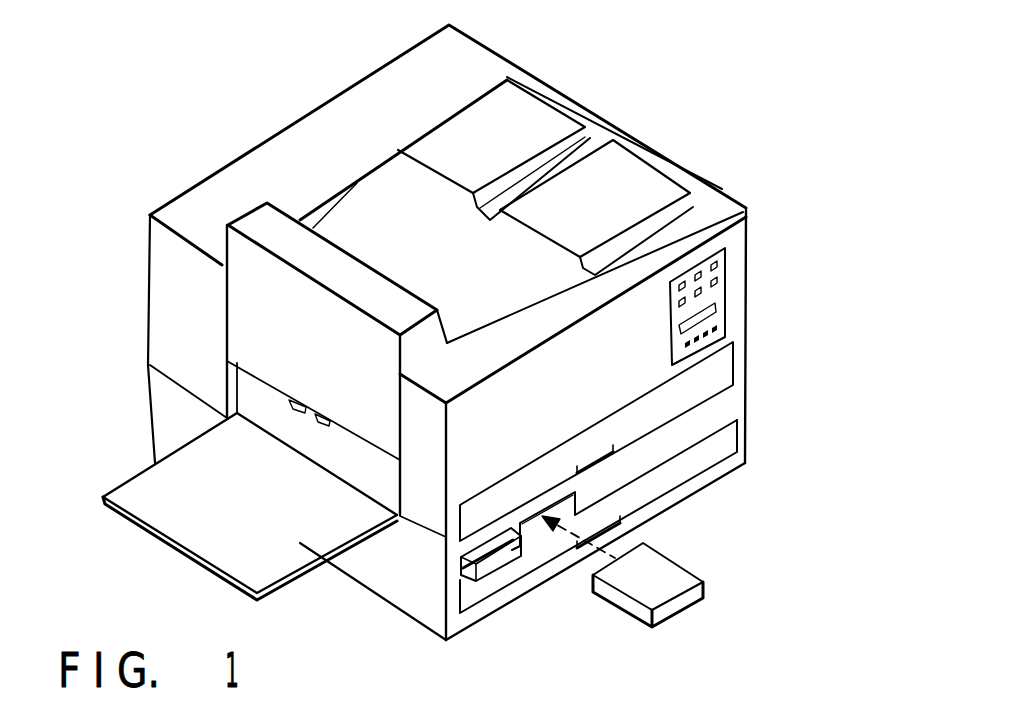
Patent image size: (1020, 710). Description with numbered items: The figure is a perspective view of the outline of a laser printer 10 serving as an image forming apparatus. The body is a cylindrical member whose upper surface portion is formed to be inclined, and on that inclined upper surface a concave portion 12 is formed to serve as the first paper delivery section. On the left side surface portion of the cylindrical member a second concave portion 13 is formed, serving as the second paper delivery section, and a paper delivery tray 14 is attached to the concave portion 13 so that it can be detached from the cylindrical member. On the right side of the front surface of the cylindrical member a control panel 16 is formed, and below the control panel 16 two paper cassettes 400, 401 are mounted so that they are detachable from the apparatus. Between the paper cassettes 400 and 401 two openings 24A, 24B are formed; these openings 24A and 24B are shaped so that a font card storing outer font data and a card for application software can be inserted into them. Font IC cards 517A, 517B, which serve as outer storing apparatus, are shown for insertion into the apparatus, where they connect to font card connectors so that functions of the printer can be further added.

The laser printer 10 is at (233, 130).
The concave portion 12 is at (360, 205).
The concave portion 13 is at (378, 467).
The paper delivery tray 14 is at (198, 562).
The control panel 16 is at (727, 293).
The paper cassette 400 is at (727, 368).
The paper cassette 401 is at (723, 450).
The opening 24A is at (482, 585).
The opening 24B is at (533, 525).
The font IC card 517A is at (502, 560).
The font IC card 517B is at (670, 587).